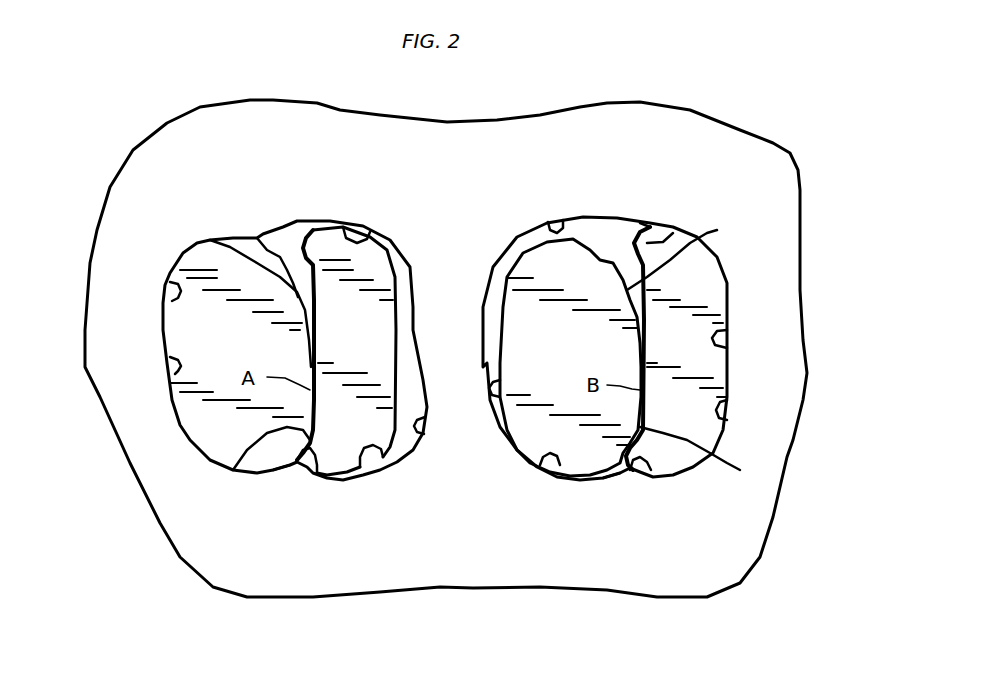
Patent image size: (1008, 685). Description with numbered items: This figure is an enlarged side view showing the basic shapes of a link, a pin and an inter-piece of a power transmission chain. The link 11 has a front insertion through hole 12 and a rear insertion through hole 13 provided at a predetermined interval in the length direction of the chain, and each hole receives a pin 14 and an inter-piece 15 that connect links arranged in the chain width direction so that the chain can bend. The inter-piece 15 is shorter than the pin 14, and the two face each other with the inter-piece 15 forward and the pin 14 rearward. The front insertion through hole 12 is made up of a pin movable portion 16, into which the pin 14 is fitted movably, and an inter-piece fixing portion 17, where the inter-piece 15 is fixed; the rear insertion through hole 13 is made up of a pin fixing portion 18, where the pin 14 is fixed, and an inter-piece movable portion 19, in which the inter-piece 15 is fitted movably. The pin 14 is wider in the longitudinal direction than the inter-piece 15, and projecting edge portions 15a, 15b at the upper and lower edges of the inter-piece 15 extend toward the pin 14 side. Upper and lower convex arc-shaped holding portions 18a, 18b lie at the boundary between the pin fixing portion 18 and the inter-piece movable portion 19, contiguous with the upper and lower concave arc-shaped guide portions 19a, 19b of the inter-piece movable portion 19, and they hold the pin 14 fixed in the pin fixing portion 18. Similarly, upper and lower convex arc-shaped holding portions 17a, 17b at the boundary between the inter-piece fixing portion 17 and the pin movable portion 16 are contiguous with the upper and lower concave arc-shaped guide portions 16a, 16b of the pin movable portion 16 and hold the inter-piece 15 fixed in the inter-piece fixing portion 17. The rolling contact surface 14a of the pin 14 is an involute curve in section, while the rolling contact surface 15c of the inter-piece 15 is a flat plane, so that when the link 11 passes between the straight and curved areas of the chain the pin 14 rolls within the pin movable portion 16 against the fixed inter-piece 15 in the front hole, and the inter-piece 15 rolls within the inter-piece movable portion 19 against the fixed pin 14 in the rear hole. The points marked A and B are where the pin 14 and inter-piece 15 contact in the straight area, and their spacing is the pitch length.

The link 11 is at (802, 197).
The front insertion through hole 12 is at (727, 347).
The rear insertion through hole 13 is at (167, 373).
The pin 14 is at (200, 430).
The rolling contact surface of the pin 14a is at (210, 240).
The inter-piece 15 is at (367, 323).
The projecting edge portion 15a is at (307, 223).
The projecting edge portion 15b is at (313, 463).
The rolling contact surface of the inter-piece 15c is at (233, 470).
The pin movable portion 16 is at (490, 387).
The concave arc-shaped guide portion 16a is at (560, 223).
The concave arc-shaped guide portion 16b is at (537, 463).
The inter-piece fixing portion 17 is at (727, 402).
The convex arc-shaped holding portion 17a is at (651, 220).
The convex arc-shaped holding portion 17b is at (620, 480).
The pin fixing portion 18 is at (163, 303).
The convex arc-shaped holding portion 18a is at (257, 232).
The convex arc-shaped holding portion 18b is at (287, 473).
The inter-piece movable portion 19 is at (417, 437).
The concave arc-shaped guide portion 19a is at (367, 237).
The concave arc-shaped guide portion 19b is at (360, 473).